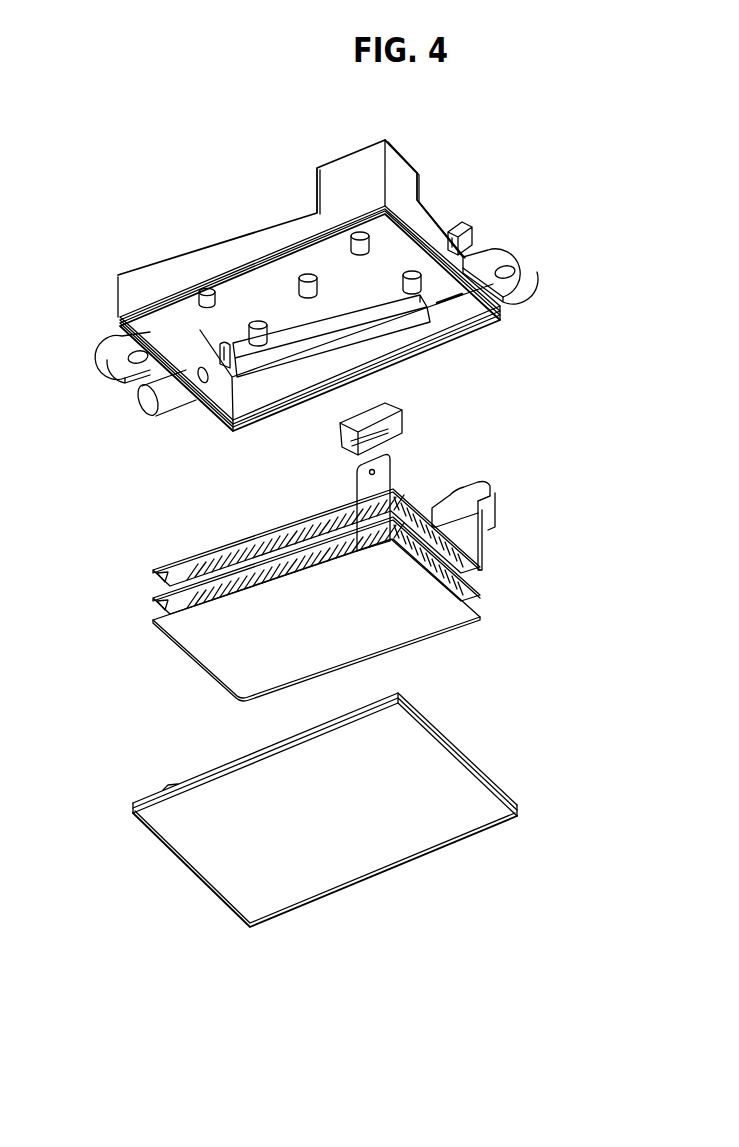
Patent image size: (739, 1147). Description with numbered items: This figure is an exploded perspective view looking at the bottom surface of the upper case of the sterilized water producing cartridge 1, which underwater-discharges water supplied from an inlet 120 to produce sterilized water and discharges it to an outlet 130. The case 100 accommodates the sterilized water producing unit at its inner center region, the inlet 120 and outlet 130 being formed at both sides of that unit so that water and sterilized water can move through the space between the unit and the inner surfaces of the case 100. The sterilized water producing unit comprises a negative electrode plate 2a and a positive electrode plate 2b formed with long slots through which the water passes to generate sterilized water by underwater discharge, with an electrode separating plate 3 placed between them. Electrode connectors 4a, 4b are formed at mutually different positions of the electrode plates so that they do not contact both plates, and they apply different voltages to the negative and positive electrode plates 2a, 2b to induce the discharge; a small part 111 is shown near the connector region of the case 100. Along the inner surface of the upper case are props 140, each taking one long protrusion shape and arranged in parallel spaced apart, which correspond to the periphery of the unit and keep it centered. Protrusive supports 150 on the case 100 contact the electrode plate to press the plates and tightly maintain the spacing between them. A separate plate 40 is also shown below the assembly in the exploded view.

The sterilized water producing cartridge 1 is at (64, 131).
The case 100 is at (498, 307).
The connector cover 111 is at (402, 413).
The inlet 120 is at (203, 387).
The outlet 130 is at (228, 378).
The prop 140 is at (400, 320).
The support 150 is at (302, 279).
The negative electrode plate 2a is at (478, 566).
The positive electrode plate 2b is at (433, 630).
The electrode separating plate 3 is at (478, 592).
The electrode connector 4a is at (480, 483).
The electrode connector 4b is at (357, 477).
The cover plate 40 is at (458, 815).